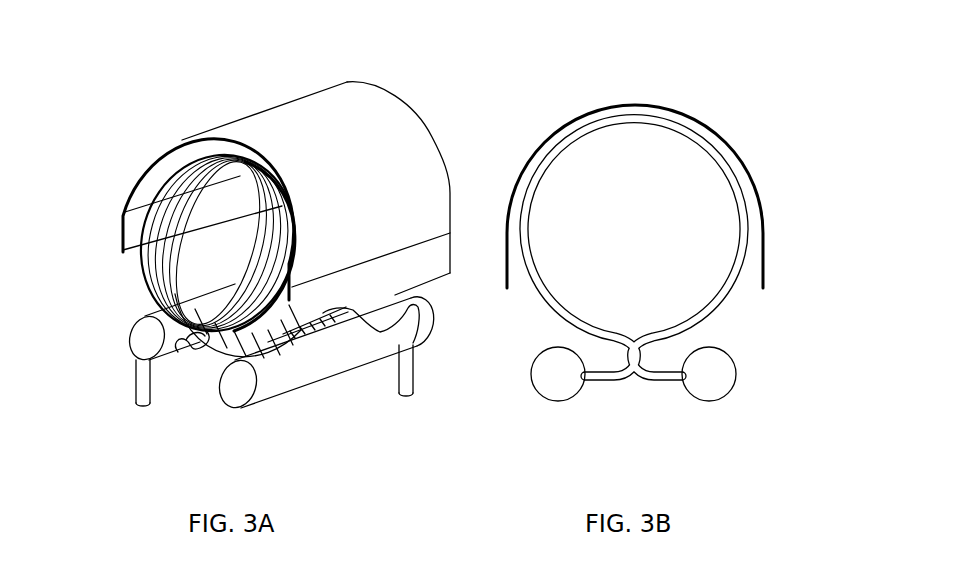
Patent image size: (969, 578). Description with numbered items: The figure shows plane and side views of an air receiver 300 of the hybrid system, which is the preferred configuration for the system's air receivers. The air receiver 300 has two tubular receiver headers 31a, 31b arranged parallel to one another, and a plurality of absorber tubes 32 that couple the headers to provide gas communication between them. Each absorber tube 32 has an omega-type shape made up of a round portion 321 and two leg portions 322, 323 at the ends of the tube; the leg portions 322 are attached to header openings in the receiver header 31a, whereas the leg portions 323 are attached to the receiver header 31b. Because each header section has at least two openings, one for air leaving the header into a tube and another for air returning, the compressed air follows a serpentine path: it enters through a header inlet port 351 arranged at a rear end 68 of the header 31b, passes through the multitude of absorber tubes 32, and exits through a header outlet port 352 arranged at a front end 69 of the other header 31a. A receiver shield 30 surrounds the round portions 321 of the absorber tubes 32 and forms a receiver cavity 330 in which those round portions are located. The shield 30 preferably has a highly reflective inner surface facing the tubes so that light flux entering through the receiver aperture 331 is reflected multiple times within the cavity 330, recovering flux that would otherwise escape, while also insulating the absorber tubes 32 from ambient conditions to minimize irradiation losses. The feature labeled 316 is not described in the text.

In FIG. 3A, the air receiver 300 is at (265, 74).
In FIG. 3B, the air receiver 300 is at (692, 96).
In FIG. 3A, the receiver shield 30 is at (423, 128).
In FIG. 3A, the receiver aperture 331 is at (110, 182).
In FIG. 3A, the absorber tube 32 is at (275, 180).
In FIG. 3B, the absorber tube 32 is at (712, 203).
In FIG. 3A, the round portion 321 is at (147, 283).
In FIG. 3B, the round portion 321 is at (711, 157).
In FIG. 3A, the receiver cavity 330 is at (243, 226).
In FIG. 3B, the receiver cavity 330 is at (710, 257).
In FIG. 3A, the leg portion 322 is at (177, 352).
In FIG. 3B, the leg portion 322 is at (605, 381).
In FIG. 3A, the leg portion 323 is at (220, 380).
In FIG. 3B, the leg portion 323 is at (665, 381).
In FIG. 3A, the receiver header 31a is at (128, 331).
In FIG. 3B, the receiver header 31a is at (555, 401).
In FIG. 3A, the receiver header 31b is at (246, 388).
In FIG. 3B, the receiver header 31b is at (738, 393).
In FIG. 3A, the front end 69 is at (150, 338).
In FIG. 3A, the rear end 68 is at (413, 342).
In FIG. 3A, the header outlet port 352 is at (141, 404).
In FIG. 3A, the header inlet port 351 is at (405, 395).
In FIG. 3A, the recess 316 is at (411, 317).